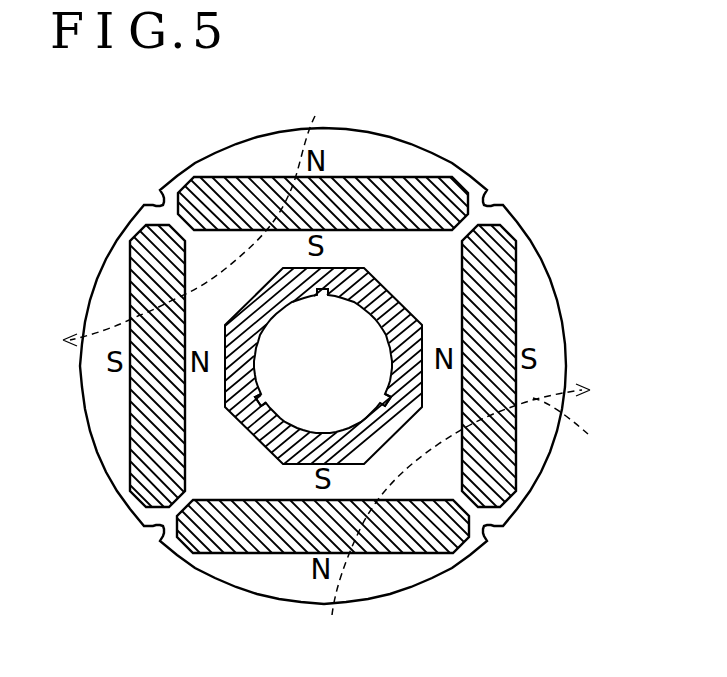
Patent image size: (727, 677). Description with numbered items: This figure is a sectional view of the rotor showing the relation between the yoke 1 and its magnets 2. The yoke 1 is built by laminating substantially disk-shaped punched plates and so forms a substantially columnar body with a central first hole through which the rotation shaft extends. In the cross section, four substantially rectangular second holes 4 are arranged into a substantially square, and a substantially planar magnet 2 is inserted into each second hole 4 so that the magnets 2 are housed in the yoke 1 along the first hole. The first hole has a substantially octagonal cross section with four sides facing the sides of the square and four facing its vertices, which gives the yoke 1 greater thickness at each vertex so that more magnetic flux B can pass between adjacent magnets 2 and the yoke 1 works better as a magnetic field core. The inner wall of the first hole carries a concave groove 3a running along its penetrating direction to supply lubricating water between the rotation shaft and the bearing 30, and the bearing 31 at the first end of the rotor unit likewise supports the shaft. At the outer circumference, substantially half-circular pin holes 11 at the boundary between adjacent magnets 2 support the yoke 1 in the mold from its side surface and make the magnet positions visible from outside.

The yoke 1 is at (552, 340).
The magnet 2 is at (362, 190).
The second hole 4 is at (249, 182).
The pin hole 11 is at (158, 200).
The bearing 30 is at (323, 366).
The bearing 31 is at (350, 330).
The concave groove 3a is at (381, 397).
The magnetic flux B is at (336, 365).